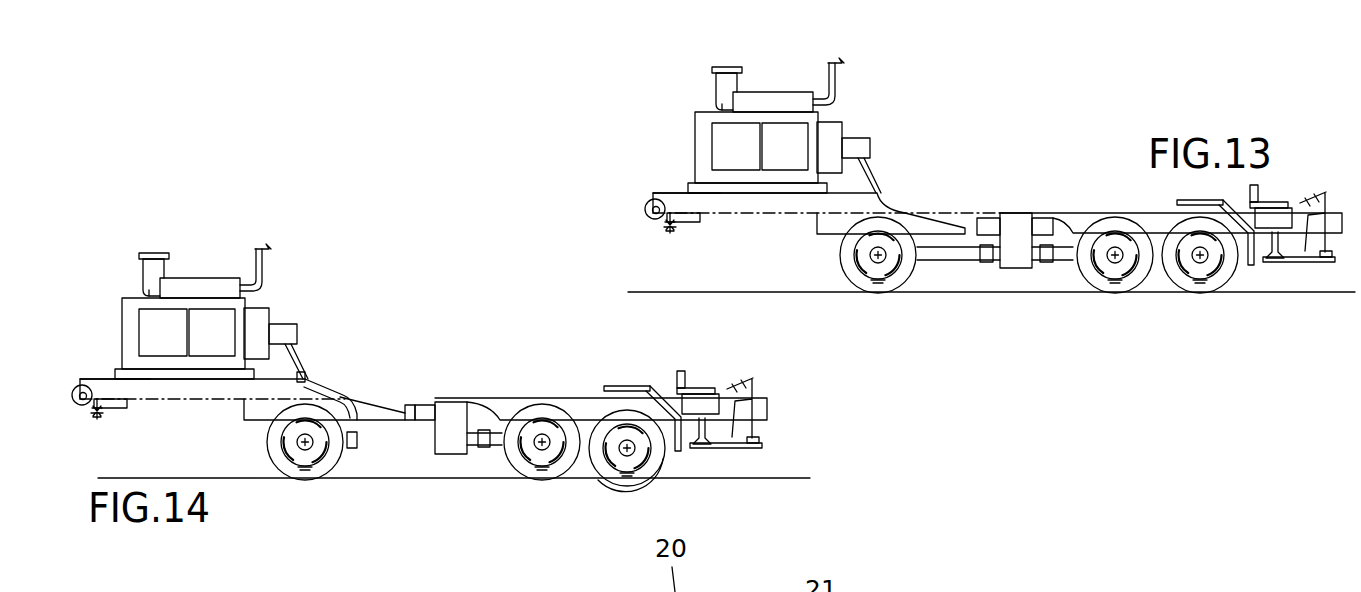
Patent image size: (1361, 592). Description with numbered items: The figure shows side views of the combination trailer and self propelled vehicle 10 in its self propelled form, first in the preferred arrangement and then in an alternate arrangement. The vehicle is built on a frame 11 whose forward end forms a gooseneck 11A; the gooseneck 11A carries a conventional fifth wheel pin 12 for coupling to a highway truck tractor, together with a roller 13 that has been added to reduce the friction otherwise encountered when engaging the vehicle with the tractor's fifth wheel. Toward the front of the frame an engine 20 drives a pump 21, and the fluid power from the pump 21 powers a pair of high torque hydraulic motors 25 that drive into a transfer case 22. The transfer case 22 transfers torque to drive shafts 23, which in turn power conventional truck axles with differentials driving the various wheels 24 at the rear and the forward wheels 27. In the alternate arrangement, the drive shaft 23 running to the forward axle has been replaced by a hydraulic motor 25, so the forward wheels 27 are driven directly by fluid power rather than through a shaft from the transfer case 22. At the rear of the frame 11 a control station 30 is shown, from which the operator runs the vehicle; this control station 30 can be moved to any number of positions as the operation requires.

In FIG. 13, the combination trailer and self propelled vehicle 10 is at (948, 212).
In FIG. 14, the combination trailer and self propelled vehicle 10 is at (378, 402).
In FIG. 13, the frame 11 is at (1073, 217).
In FIG. 14, the frame 11 is at (502, 407).
In FIG. 13, the gooseneck 11A is at (672, 197).
In FIG. 14, the gooseneck 11A is at (102, 385).
In FIG. 13, the fifth wheel pin 12 is at (672, 230).
In FIG. 14, the fifth wheel pin 12 is at (97, 422).
In FIG. 13, the roller 13 is at (646, 207).
In FIG. 14, the roller 13 is at (72, 393).
In FIG. 13, the engine 20 is at (773, 175).
In FIG. 14, the engine 20 is at (200, 325).
In FIG. 13, the pump 21 is at (860, 140).
In FIG. 14, the pump 21 is at (293, 327).
In FIG. 13, the transfer case 22 is at (1025, 257).
In FIG. 14, the transfer case 22 is at (455, 443).
In FIG. 13, the drive shafts 23 is at (950, 257).
In FIG. 14, the drive shafts 23 is at (482, 447).
In FIG. 13, the wheels 24 is at (1200, 280).
In FIG. 14, the wheels 24 is at (627, 477).
In FIG. 13, the hydraulic motors 25 is at (1043, 222).
In FIG. 14, the hydraulic motors 25 is at (425, 410).
In FIG. 13, the forward wheels 27 is at (878, 284).
In FIG. 14, the forward wheels 27 is at (305, 477).
In FIG. 13, the control station 30 is at (1300, 260).
In FIG. 14, the control station 30 is at (728, 455).